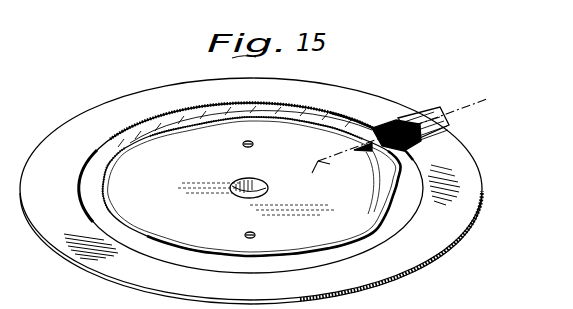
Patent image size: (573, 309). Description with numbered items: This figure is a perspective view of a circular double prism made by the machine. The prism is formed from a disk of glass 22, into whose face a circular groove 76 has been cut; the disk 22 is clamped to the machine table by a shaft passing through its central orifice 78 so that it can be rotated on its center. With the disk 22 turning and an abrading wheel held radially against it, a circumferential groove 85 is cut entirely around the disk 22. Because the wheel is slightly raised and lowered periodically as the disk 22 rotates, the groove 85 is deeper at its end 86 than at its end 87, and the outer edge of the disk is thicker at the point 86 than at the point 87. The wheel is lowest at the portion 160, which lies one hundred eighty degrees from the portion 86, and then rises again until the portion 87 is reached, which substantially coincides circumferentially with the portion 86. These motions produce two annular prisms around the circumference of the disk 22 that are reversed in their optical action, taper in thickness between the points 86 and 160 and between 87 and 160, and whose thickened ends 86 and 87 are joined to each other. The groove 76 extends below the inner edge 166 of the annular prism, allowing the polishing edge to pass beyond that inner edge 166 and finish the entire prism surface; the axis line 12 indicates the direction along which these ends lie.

The axis line 12 is at (395, 143).
The disk of glass 22 is at (314, 153).
The circular groove 76 is at (344, 121).
The central orifice 78 is at (237, 183).
The circumferential groove 85 is at (444, 247).
The deeper end of groove 86 is at (449, 129).
The shallower end of groove 87 is at (414, 121).
The portion 180 degrees from groove end 160 is at (86, 254).
The inner edge of annular prism 166 is at (418, 157).